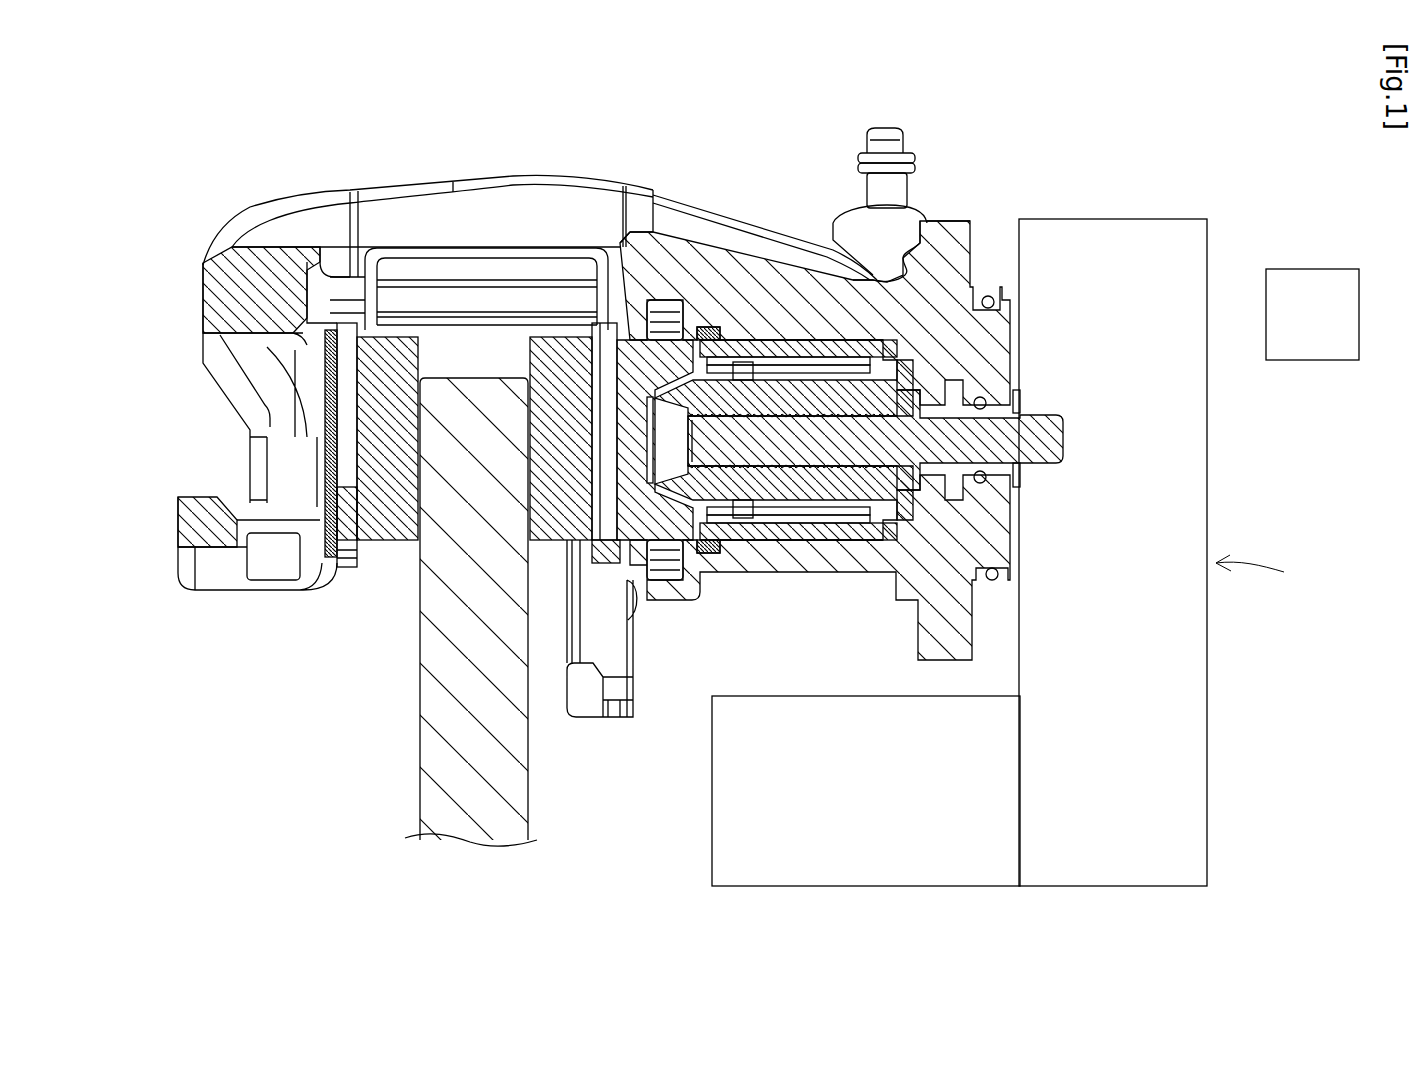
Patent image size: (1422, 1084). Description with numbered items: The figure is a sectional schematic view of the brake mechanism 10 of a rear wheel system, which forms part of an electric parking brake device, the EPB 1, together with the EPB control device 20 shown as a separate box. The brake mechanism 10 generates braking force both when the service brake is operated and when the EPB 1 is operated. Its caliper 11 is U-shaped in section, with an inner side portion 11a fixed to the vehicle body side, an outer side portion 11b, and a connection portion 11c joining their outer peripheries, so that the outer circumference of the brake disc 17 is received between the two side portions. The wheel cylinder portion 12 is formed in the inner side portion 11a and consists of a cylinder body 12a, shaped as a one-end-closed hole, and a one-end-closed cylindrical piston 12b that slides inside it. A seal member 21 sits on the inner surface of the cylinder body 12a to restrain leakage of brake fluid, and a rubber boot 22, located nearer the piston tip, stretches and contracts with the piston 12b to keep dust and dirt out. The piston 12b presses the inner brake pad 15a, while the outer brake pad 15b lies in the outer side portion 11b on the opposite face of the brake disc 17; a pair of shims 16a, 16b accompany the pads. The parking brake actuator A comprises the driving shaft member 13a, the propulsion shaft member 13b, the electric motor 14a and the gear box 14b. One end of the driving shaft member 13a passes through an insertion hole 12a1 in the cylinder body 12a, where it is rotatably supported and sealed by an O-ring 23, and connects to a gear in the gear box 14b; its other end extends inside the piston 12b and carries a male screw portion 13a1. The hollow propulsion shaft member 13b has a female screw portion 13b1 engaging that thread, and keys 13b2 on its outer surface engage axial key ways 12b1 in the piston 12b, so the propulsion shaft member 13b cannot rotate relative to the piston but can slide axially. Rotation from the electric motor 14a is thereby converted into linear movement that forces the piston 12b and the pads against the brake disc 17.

The EPB 1 is at (1242, 145).
The brake mechanism 10 is at (1045, 127).
The caliper 11 is at (522, 160).
The inner side portion 11a is at (780, 243).
The outer side portion 11b is at (205, 262).
The connection portion 11c is at (407, 183).
The wheel cylinder portion 12 is at (820, 402).
The cylinder body 12a is at (738, 300).
The insertion hole 12a1 is at (1008, 392).
The piston 12b is at (700, 547).
The key ways 12b1 is at (812, 370).
The driving shaft member 13a is at (905, 450).
The male screw portion 13a1 is at (735, 492).
The propulsion shaft member 13b is at (812, 482).
The female screw portion 13b1 is at (850, 502).
The keys 13b2 is at (733, 532).
The electric motor 14a is at (864, 890).
The gear box 14b is at (1153, 218).
The brake pad 15a is at (548, 542).
The brake pad 15b is at (383, 522).
The shim 16a is at (613, 357).
The shim 16b is at (330, 457).
The brake disc 17 is at (420, 788).
The EPB control device 20 is at (1313, 268).
The seal member 21 is at (660, 318).
The boot 22 is at (703, 330).
The O-ring 23 is at (985, 490).
The parking brake actuator A is at (1262, 575).